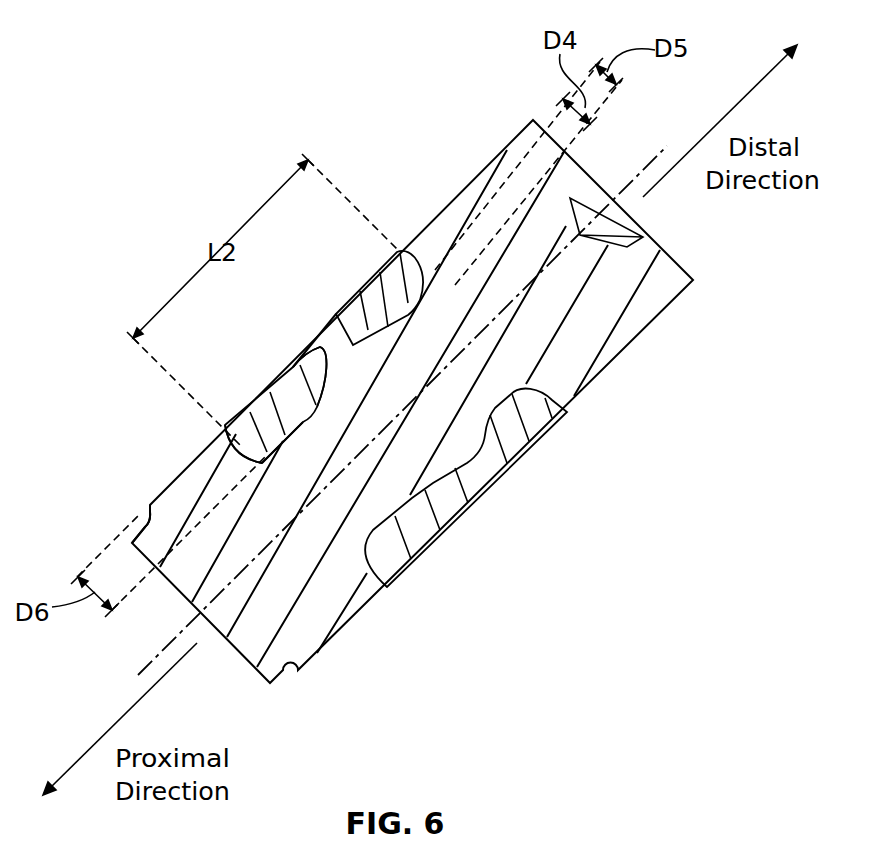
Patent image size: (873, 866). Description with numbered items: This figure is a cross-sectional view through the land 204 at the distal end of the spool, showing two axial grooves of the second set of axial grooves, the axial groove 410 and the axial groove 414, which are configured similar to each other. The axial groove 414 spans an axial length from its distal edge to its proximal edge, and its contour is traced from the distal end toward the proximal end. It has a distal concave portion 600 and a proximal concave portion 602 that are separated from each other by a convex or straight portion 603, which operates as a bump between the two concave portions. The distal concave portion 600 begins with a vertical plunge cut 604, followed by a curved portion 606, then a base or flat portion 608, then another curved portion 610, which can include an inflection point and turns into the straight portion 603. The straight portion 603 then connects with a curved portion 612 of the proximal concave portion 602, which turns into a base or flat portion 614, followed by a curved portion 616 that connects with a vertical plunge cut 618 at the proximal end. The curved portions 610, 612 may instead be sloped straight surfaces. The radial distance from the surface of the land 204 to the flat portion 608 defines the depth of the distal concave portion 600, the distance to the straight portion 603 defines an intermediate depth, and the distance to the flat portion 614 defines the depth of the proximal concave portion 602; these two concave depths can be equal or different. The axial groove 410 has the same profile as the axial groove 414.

The land 204 is at (513, 140).
The axial groove 410 is at (393, 580).
The axial groove 414 is at (232, 413).
The distal concave portion 600 is at (380, 296).
The proximal concave portion 602 is at (275, 405).
The straight portion 603 is at (320, 372).
The vertical plunge cut 604 is at (422, 276).
The curved portion 606 is at (428, 285).
The flat portion 608 is at (407, 318).
The curved portion 610 is at (332, 360).
The curved portion 612 is at (323, 387).
The flat portion 614 is at (293, 437).
The curved portion 616 is at (258, 456).
The vertical plunge cut 618 is at (228, 437).